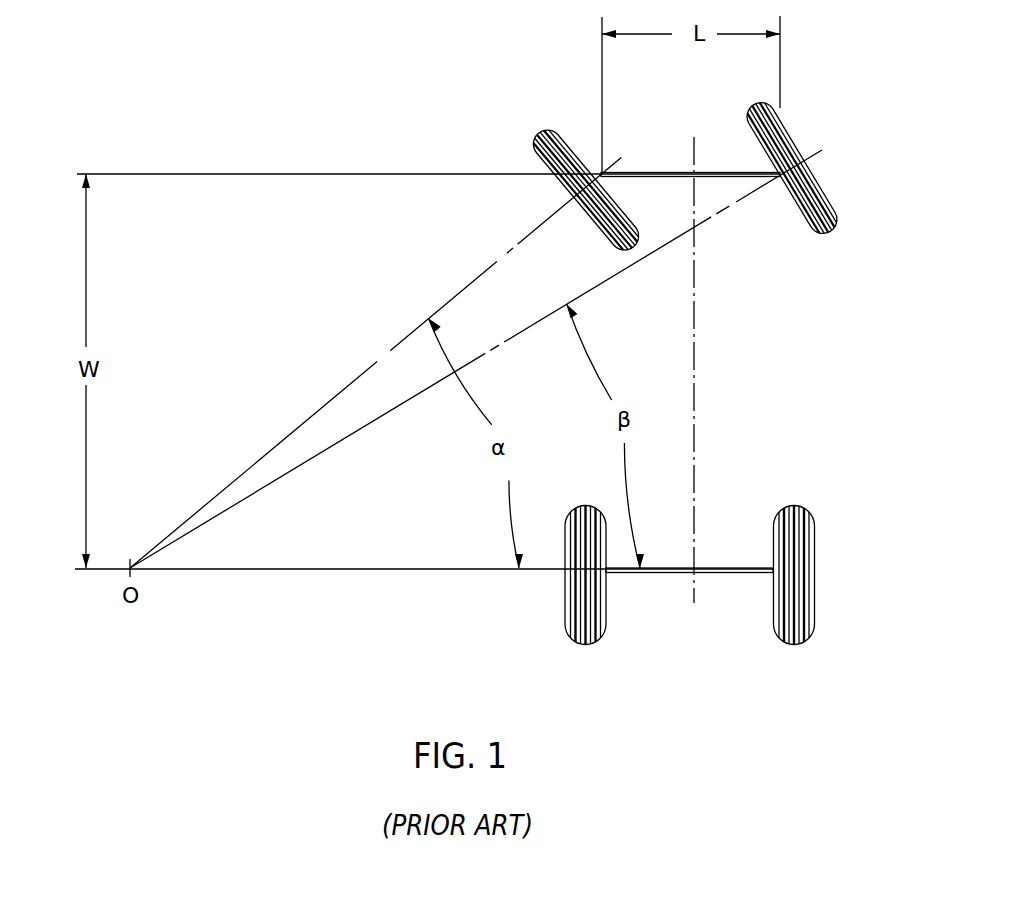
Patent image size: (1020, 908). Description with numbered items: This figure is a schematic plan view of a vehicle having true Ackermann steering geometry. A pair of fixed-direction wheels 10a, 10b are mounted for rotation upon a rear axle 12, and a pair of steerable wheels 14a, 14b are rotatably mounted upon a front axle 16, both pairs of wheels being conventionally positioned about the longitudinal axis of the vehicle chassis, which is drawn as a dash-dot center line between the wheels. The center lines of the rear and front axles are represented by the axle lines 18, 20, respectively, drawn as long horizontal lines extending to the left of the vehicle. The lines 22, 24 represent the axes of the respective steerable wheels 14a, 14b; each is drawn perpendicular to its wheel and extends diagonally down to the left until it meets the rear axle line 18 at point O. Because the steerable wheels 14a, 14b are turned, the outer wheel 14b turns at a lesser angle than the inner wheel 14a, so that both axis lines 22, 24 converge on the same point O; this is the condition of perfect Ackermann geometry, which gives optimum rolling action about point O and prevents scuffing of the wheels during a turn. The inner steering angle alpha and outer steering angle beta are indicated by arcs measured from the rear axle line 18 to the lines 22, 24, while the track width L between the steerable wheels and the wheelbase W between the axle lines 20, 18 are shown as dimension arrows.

The fixed-direction wheel 10a is at (564, 622).
The fixed-direction wheel 10b is at (813, 597).
The rear axle 12 is at (740, 569).
The steerable wheel 14a is at (542, 138).
The steerable wheel 14b is at (800, 137).
The front axle 16 is at (730, 174).
The axle line 18 is at (285, 571).
The axle line 20 is at (301, 175).
The line 22 is at (290, 436).
The line 24 is at (326, 452).